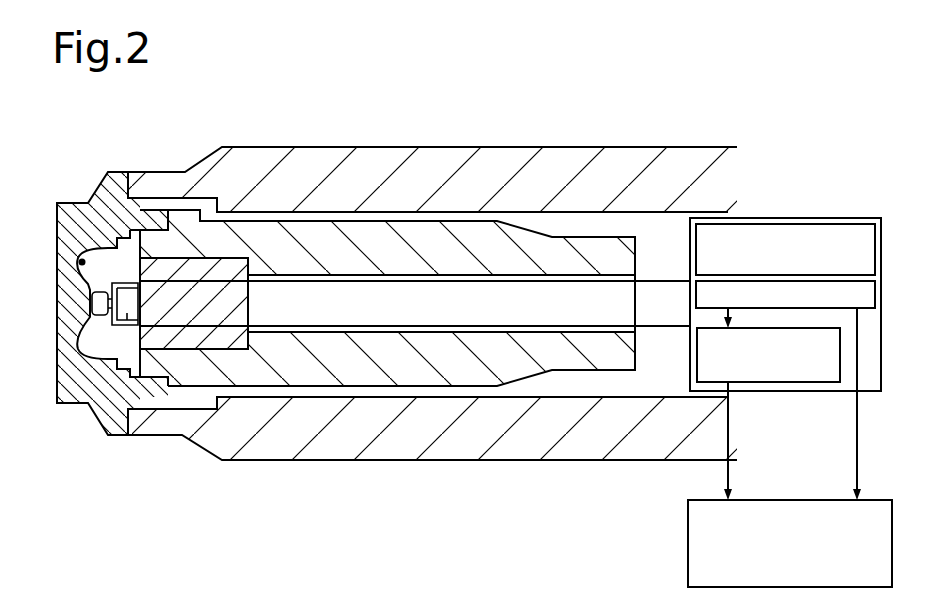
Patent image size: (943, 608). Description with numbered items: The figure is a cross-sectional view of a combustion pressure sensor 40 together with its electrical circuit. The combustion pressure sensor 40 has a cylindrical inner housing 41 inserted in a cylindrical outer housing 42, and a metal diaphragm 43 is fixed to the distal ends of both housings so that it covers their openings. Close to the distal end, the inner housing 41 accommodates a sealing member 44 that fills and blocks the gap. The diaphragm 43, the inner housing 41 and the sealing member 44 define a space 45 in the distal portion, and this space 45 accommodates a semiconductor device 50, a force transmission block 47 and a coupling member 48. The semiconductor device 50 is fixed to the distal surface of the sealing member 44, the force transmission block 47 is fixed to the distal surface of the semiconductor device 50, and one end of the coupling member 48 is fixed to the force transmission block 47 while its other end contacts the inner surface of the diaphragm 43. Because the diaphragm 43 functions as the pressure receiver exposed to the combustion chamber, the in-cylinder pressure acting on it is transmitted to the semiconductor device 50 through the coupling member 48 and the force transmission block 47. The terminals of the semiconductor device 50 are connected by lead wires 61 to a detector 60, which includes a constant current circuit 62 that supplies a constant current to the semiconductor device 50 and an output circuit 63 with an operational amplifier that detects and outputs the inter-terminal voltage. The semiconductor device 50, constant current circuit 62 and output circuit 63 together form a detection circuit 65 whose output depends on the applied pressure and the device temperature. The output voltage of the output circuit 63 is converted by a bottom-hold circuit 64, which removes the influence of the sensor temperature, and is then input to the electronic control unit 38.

The electronic control unit 38 is at (688, 541).
The combustion pressure sensor 40 is at (376, 274).
The inner housing 41 is at (368, 231).
The outer housing 42 is at (448, 158).
The diaphragm 43 is at (77, 203).
The sealing member 44 is at (177, 262).
The space 45 is at (78, 262).
The force transmission block 47 is at (112, 318).
The coupling member 48 is at (92, 303).
The semiconductor device 50 is at (126, 320).
The detector 60 is at (789, 217).
The lead wires 61 is at (662, 280).
The constant current circuit 62 is at (858, 218).
The output circuit 63 is at (866, 310).
The bottom-hold circuit 64 is at (769, 383).
The detection circuit 65 is at (794, 311).